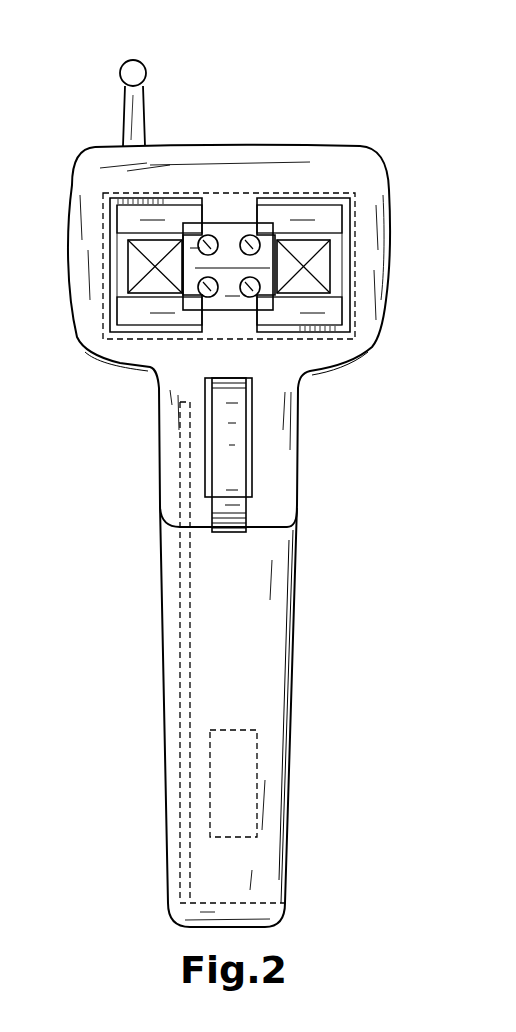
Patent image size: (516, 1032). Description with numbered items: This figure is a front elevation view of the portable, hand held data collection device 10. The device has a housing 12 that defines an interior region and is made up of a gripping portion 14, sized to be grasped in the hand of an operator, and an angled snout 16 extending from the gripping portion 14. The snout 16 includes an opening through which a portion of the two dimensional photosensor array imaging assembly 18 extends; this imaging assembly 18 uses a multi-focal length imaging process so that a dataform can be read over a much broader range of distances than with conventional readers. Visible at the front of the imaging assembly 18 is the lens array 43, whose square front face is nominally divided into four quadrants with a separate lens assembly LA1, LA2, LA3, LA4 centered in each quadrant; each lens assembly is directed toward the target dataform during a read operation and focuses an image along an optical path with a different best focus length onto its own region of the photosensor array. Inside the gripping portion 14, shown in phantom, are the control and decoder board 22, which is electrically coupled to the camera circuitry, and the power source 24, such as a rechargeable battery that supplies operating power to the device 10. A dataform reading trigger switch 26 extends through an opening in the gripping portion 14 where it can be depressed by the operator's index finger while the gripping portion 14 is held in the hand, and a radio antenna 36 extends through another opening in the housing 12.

The portable data collection device 10 is at (132, 491).
The housing 12 is at (150, 549).
The gripping portion 14 is at (248, 670).
The angled snout 16 is at (93, 280).
The imaging assembly 18 is at (340, 277).
The control and decoder board 22 is at (187, 632).
The power source 24 is at (256, 752).
The dataform reading trigger switch 26 is at (230, 467).
The radio antenna 36 is at (132, 108).
The lens array 43 is at (226, 224).
The lens assembly LA1 is at (207, 235).
The lens assembly LA2 is at (203, 295).
The lens assembly LA3 is at (258, 236).
The lens assembly LA4 is at (250, 297).